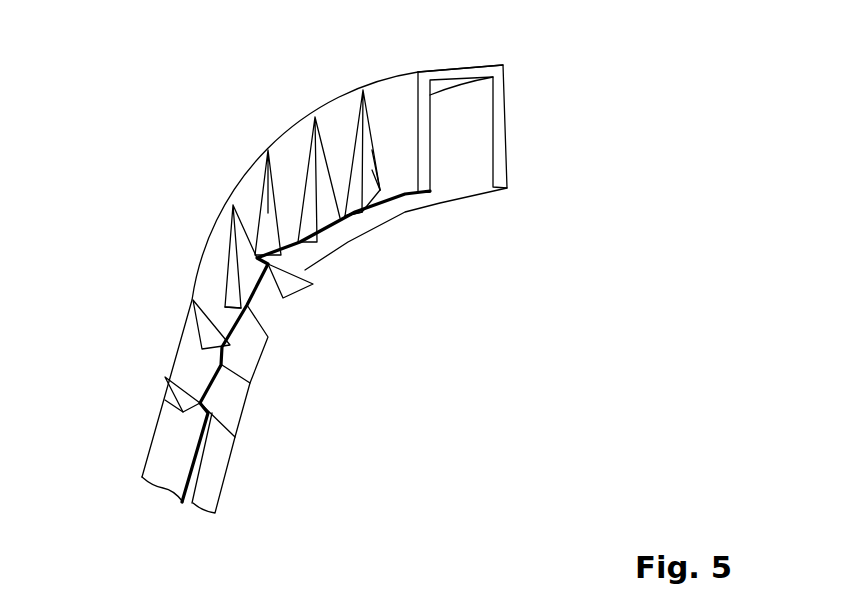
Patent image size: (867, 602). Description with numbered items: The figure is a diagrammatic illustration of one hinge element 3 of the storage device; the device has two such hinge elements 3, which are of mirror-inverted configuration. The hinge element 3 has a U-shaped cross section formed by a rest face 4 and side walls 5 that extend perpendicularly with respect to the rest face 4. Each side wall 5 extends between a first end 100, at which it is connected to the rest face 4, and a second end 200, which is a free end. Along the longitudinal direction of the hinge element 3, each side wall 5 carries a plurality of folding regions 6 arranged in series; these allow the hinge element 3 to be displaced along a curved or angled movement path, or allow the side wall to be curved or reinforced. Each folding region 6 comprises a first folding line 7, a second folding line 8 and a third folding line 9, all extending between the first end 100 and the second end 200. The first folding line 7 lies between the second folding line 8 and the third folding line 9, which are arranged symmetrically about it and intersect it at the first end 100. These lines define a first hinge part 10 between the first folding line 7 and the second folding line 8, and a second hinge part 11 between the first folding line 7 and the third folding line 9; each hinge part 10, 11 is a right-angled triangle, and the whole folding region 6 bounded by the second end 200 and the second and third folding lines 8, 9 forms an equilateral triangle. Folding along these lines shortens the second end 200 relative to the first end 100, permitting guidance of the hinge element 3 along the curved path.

The hinge element 3 is at (180, 164).
The rest face 4 is at (408, 65).
The side wall 5 is at (520, 110).
The folding region 6 is at (232, 182).
The first folding line 7 is at (352, 190).
The second folding line 8 is at (349, 195).
The third folding line 9 is at (382, 168).
The first hinge part 10 is at (345, 217).
The second hinge part 11 is at (368, 188).
The first end 100 is at (450, 45).
The second end 200 is at (434, 218).